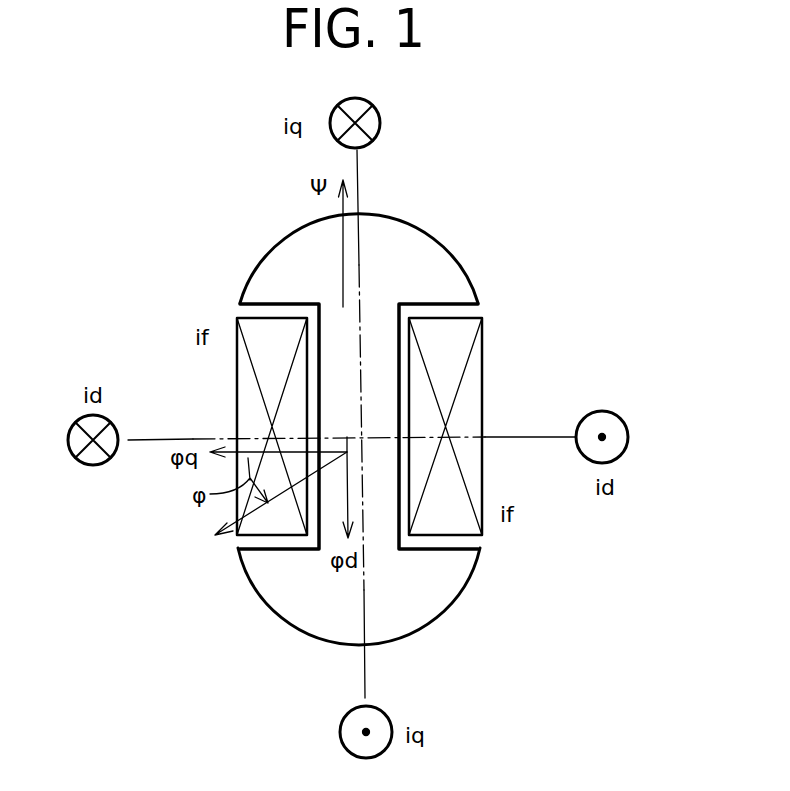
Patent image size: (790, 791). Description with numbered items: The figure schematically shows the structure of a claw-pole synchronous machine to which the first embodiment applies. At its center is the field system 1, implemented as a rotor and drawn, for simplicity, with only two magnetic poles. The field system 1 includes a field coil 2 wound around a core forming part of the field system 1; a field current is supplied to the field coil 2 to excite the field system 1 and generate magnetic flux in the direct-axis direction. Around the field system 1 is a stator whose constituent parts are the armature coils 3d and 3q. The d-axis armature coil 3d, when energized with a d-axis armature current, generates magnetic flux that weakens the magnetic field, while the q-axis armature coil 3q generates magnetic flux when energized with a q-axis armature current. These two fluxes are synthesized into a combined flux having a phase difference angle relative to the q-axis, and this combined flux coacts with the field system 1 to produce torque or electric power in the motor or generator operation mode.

The field system 1 is at (447, 250).
The field coil 2 is at (483, 378).
The q-axis armature coil 3q is at (381, 120).
The d-axis armature coil 3d is at (600, 410).